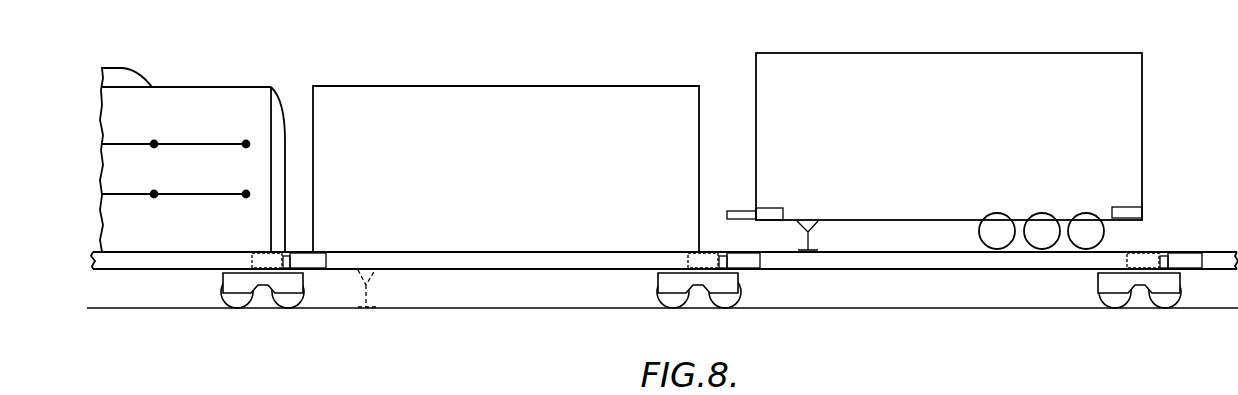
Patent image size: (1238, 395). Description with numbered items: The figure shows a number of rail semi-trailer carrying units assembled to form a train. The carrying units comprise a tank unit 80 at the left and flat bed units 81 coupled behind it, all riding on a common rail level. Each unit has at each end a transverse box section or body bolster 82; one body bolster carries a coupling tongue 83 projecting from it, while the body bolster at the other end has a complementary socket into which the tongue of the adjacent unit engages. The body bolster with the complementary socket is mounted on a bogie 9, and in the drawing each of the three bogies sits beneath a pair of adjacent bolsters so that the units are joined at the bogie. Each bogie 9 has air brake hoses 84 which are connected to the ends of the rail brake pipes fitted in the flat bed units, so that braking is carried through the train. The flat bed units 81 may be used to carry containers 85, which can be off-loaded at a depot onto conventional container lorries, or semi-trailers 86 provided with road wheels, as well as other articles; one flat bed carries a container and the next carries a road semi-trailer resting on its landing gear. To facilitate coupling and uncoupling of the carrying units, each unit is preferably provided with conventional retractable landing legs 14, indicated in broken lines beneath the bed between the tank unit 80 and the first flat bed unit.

The bogie 9 is at (265, 280).
The retractable landing legs 14 is at (380, 290).
The tank unit 80 is at (163, 262).
The flat bed unit 81 is at (533, 260).
The body bolster 82 is at (252, 257).
The coupling tongue 83 is at (286, 262).
The air brake hoses 84 is at (320, 280).
The container 85 is at (587, 107).
The semi-trailer 86 is at (912, 82).